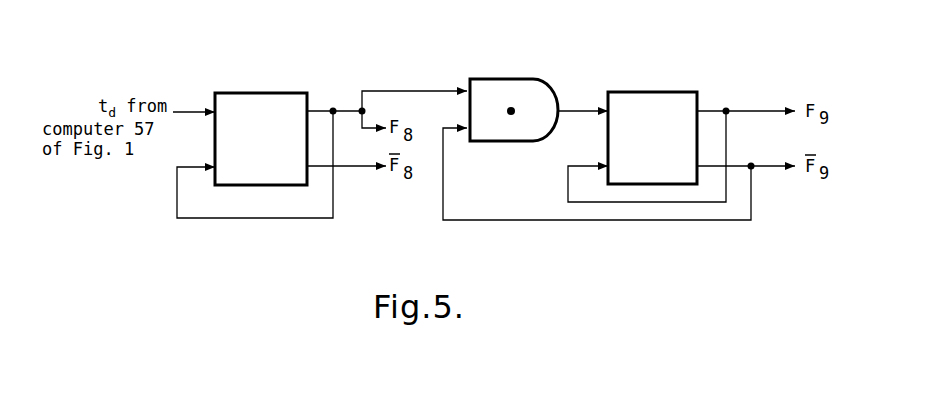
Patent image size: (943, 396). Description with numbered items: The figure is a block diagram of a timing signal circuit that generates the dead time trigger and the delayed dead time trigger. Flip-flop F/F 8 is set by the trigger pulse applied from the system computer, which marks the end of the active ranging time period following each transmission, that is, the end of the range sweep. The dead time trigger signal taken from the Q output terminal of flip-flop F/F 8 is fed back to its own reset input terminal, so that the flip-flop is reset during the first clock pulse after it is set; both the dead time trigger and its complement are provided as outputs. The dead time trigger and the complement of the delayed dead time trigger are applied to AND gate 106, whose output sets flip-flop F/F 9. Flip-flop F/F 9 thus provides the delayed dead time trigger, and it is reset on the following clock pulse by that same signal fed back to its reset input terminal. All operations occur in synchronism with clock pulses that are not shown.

The AND gate 106 is at (510, 92).
The flip-flop F/F- 8 is at (261, 139).
The flip-flop F/F- 9 is at (652, 138).